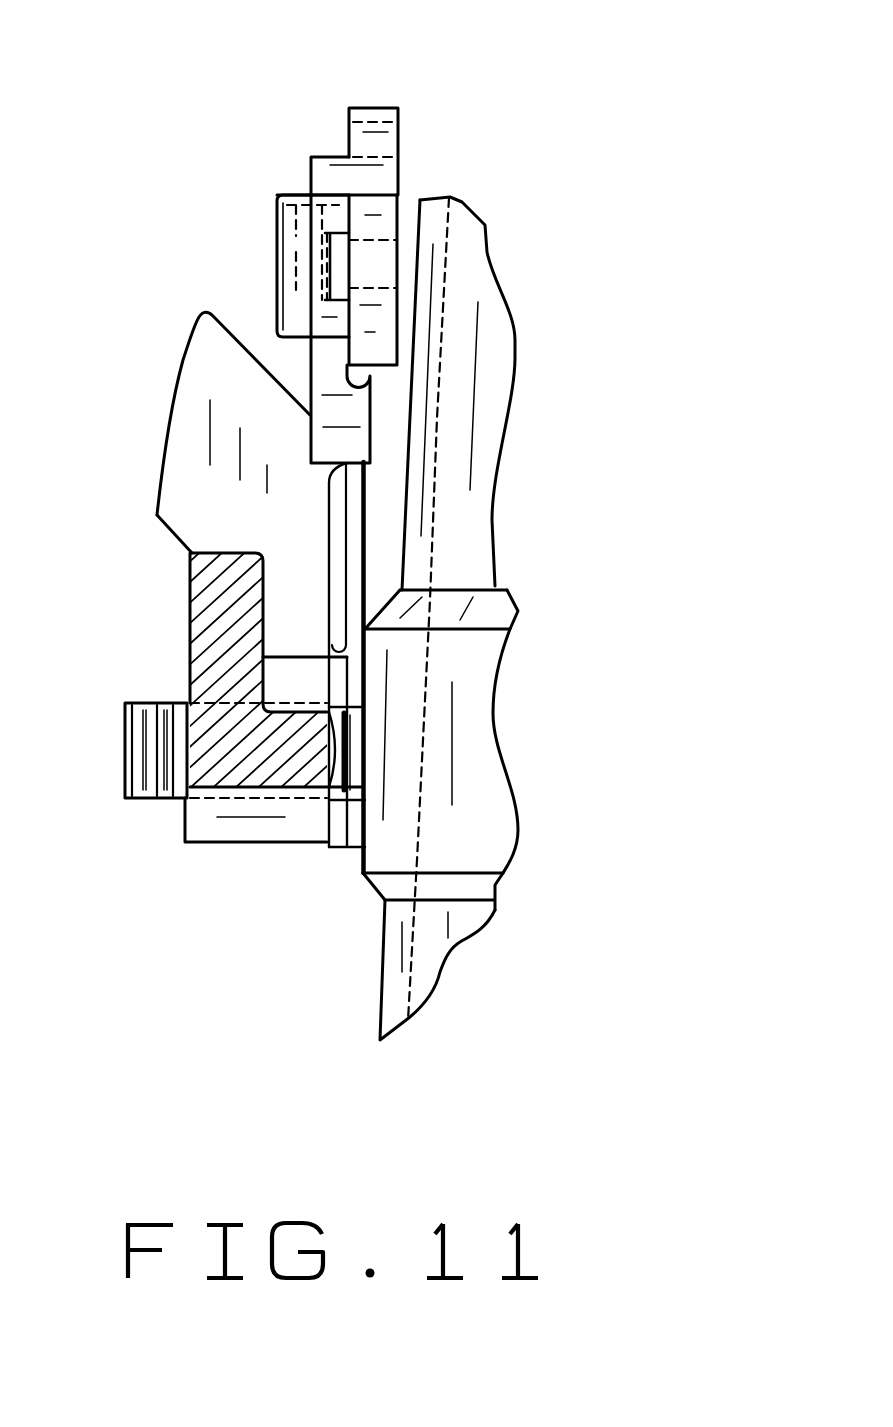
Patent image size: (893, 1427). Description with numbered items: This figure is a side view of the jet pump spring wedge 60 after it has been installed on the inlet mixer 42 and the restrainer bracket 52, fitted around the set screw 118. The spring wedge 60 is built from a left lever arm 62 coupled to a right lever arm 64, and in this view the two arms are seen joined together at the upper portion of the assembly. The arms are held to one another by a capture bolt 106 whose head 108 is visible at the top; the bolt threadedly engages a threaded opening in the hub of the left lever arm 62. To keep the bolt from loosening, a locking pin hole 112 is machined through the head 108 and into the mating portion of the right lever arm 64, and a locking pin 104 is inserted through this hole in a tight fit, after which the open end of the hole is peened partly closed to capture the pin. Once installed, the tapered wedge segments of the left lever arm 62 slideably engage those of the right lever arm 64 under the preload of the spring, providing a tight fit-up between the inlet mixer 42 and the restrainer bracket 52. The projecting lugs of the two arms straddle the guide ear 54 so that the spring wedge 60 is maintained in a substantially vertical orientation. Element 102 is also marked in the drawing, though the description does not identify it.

The inlet mixer 42 is at (461, 692).
The restrainer bracket 52 is at (190, 633).
The guide ear 54 is at (182, 361).
The jet pump spring wedge 60 is at (402, 72).
The left lever arm 62 is at (372, 327).
The right lever arm 64 is at (310, 372).
The pin 102 is at (319, 197).
The locking pin 104 is at (277, 201).
The capture bolt 106 is at (297, 307).
The head 108 is at (279, 217).
The locking pin hole 112 is at (297, 195).
The set screw 118 is at (143, 798).